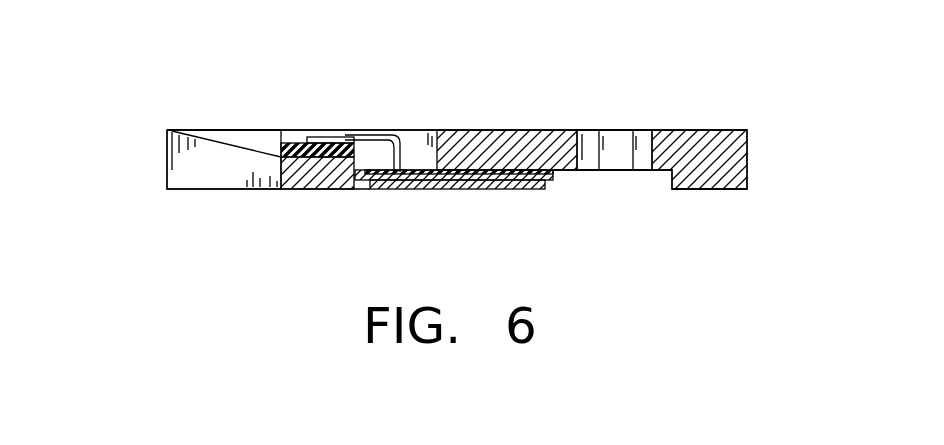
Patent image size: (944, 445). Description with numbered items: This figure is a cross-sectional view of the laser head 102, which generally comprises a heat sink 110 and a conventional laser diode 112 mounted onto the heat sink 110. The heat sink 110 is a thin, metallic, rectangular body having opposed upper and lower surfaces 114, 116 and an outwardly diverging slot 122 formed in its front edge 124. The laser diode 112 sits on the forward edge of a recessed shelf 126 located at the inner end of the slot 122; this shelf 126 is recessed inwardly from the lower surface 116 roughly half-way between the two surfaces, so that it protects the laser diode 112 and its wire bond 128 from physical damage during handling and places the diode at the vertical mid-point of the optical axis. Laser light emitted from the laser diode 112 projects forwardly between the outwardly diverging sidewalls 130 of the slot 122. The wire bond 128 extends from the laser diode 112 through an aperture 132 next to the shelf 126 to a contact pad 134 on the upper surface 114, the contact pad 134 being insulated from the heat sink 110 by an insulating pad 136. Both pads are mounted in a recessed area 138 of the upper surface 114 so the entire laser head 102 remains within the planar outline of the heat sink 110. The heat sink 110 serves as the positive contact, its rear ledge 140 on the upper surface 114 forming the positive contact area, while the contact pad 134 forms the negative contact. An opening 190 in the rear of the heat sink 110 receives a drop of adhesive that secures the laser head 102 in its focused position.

The laser head 102 is at (248, 242).
The heat sink 110 is at (540, 108).
The laser diode 112 is at (285, 143).
The upper surface 114 is at (683, 192).
The lower surface 116 is at (480, 142).
The outwardly diverging slot 122 is at (154, 180).
The front edge 124 is at (162, 155).
The recessed shelf 126 is at (352, 141).
The wire bond 128 is at (405, 135).
The outwardly diverging sidewalls 130 is at (238, 172).
The aperture 132 is at (412, 167).
The contact pad 134 is at (540, 190).
The insulating pad 136 is at (443, 175).
The recessed area 138 is at (572, 175).
The rear ledge 140 is at (715, 192).
The opening 190 is at (627, 155).